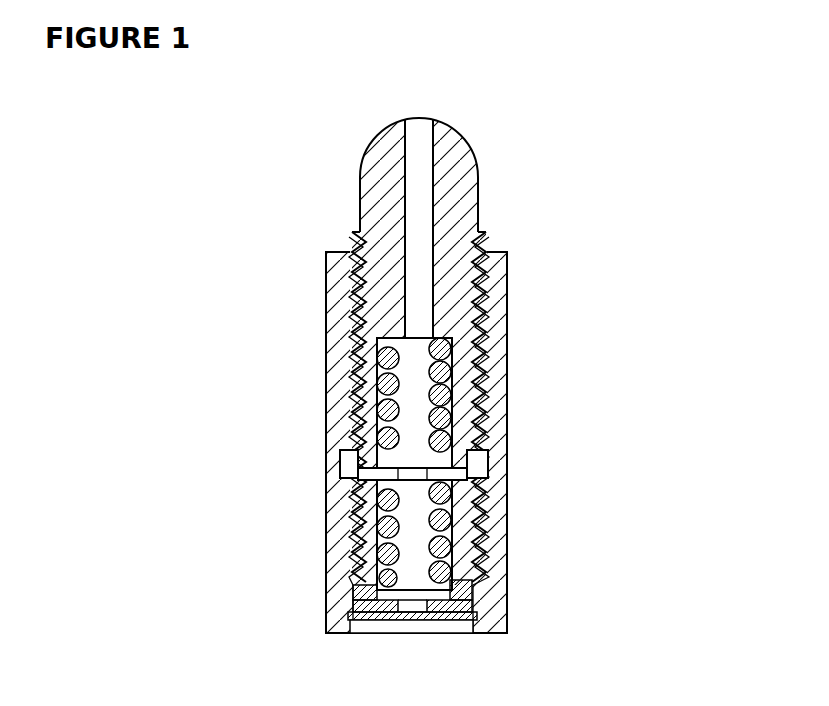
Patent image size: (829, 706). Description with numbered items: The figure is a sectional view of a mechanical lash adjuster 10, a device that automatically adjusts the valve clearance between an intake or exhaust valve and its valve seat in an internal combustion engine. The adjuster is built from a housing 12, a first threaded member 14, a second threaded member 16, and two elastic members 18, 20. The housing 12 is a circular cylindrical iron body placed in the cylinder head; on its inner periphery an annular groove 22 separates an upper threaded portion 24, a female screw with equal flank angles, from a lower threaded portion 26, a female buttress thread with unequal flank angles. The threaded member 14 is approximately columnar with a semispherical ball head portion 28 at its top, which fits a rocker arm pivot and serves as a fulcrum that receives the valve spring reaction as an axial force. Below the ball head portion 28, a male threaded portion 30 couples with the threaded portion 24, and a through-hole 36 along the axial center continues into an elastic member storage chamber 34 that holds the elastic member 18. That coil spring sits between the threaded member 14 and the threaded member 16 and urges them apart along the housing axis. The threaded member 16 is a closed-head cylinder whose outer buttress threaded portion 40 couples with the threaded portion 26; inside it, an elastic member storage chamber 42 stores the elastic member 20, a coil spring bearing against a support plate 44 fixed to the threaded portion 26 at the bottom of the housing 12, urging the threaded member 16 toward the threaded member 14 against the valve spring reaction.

The mechanical lash adjuster 10 is at (560, 313).
The housing 12 is at (510, 410).
The threaded member 14 is at (482, 198).
The threaded member 16 is at (460, 537).
The elastic member 18 is at (452, 372).
The elastic member 20 is at (465, 578).
The annular groove 22 is at (488, 462).
The threaded portion 24 is at (507, 278).
The threaded portion 26 is at (472, 505).
The ball head portion 28 is at (455, 128).
The threaded portion 30 is at (481, 240).
The elastic member storage chamber 34 is at (418, 345).
The through-hole 36 is at (412, 148).
The threaded portion 40 is at (355, 518).
The elastic member storage chamber 42 is at (420, 615).
The support plate 44 is at (375, 620).